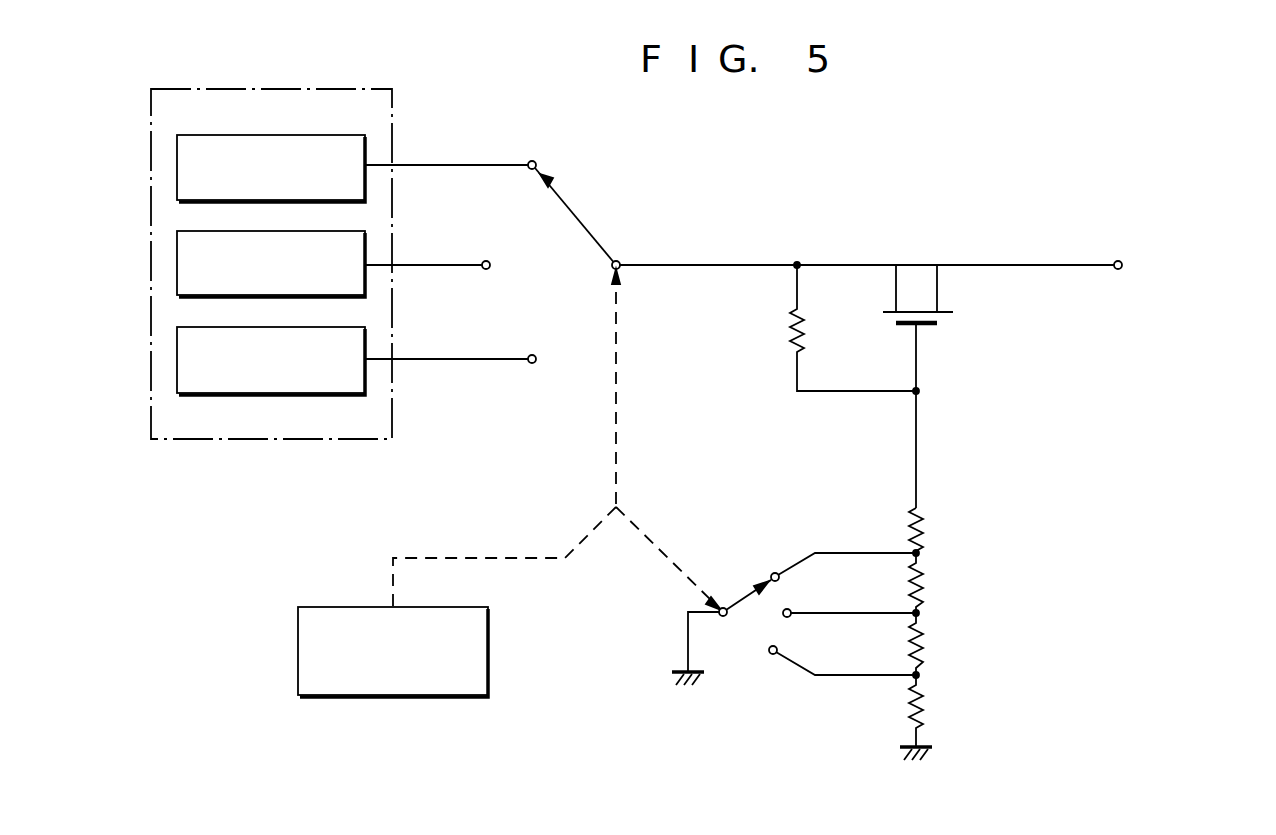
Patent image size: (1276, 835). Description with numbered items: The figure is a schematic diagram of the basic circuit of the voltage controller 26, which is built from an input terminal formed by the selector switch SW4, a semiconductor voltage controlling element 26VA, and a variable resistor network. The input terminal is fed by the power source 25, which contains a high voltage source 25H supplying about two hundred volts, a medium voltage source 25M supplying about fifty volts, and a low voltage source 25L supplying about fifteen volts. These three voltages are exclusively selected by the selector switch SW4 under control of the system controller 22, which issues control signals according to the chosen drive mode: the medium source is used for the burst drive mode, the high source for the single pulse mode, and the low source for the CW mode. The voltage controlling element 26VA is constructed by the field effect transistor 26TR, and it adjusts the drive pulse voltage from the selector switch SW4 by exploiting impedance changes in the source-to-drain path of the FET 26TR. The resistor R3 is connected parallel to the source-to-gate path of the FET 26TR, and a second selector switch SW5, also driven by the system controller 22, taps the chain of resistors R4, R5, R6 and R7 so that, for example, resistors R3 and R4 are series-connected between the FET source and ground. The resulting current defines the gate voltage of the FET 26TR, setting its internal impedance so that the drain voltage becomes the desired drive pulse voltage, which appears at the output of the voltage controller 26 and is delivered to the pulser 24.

The power source 25 is at (374, 440).
The high voltage source 25H is at (303, 135).
The medium voltage source 25M is at (300, 235).
The low voltage source 25L is at (302, 333).
The selector switch SW4 is at (622, 258).
The selector switch SW5 is at (738, 585).
The system controller 22 is at (312, 665).
The voltage controller 26 is at (1123, 179).
The pulser 24 is at (1188, 267).
The resistor R3 is at (804, 333).
The resistor R4 is at (924, 519).
The resistor R5 is at (924, 580).
The resistor R6 is at (924, 645).
The resistor R7 is at (924, 702).
The field effect transistor 26TR is at (942, 320).
The voltage controlling element 26VA is at (928, 348).